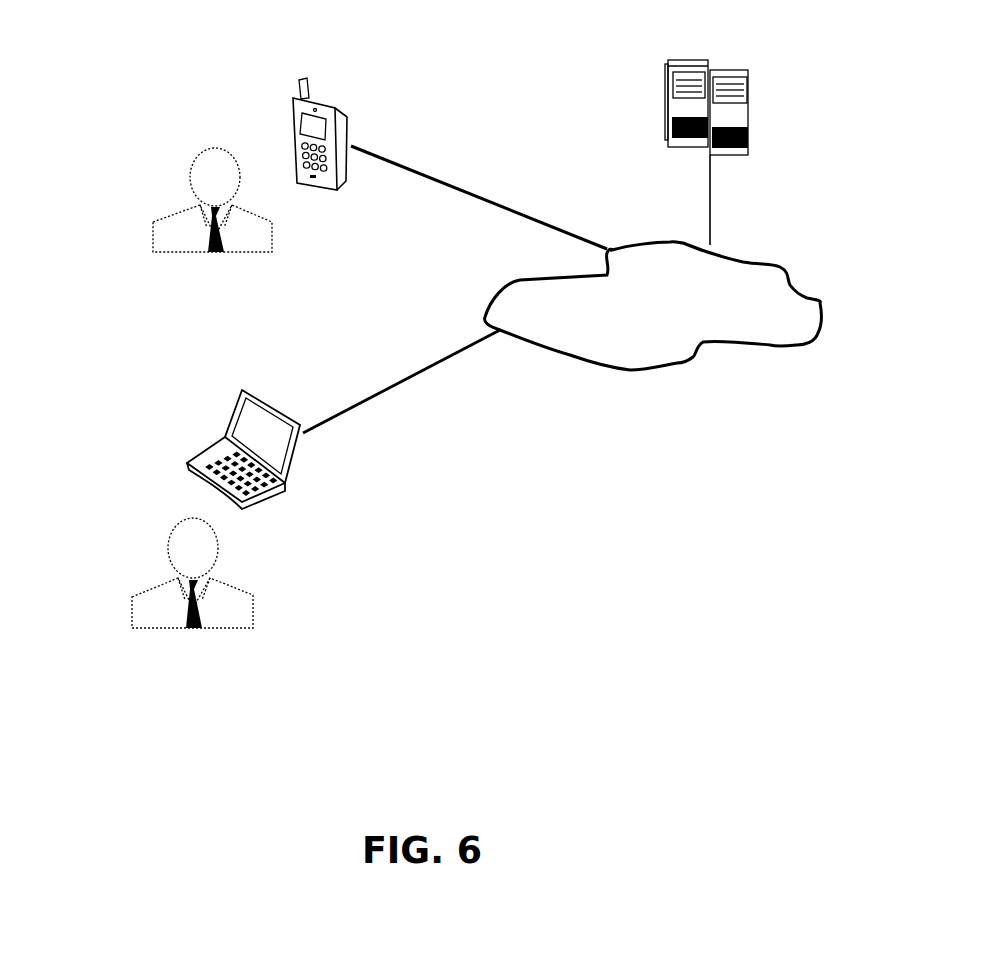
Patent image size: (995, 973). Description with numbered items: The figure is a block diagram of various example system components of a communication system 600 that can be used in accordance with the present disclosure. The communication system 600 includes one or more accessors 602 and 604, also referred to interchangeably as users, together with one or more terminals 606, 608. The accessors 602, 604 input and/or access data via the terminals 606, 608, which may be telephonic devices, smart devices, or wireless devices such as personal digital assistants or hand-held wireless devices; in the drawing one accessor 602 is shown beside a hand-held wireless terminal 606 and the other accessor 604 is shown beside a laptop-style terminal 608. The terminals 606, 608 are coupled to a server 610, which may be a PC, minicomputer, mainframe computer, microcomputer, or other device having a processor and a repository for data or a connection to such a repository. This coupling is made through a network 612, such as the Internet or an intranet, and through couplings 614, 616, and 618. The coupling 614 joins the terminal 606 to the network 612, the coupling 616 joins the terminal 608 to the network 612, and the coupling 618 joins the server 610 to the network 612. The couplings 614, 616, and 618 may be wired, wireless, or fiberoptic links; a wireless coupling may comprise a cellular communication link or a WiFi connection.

The communication system 600 is at (483, 27).
The accessor 602 is at (185, 180).
The accessor 604 is at (163, 550).
The terminal 606 is at (282, 137).
The terminal 608 is at (198, 392).
The server 610 is at (743, 72).
The network 612 is at (607, 263).
The coupling 614 is at (470, 188).
The coupling 616 is at (418, 370).
The coupling 618 is at (710, 193).